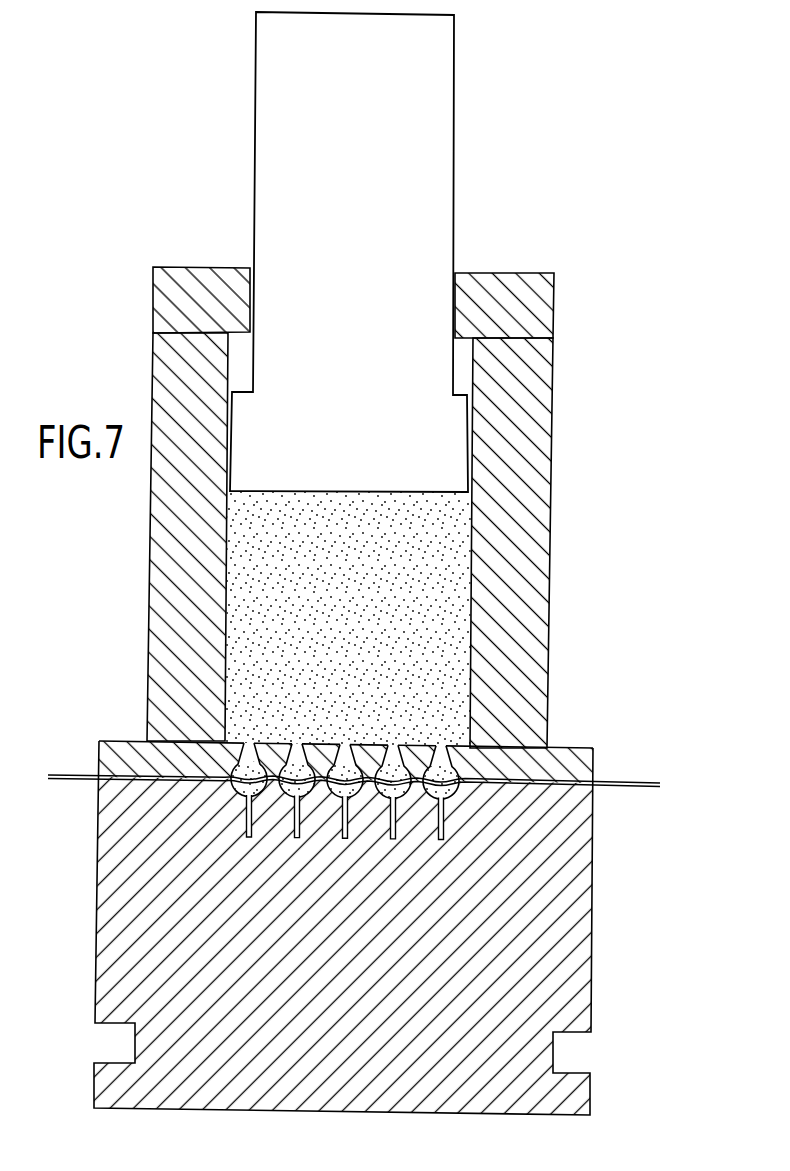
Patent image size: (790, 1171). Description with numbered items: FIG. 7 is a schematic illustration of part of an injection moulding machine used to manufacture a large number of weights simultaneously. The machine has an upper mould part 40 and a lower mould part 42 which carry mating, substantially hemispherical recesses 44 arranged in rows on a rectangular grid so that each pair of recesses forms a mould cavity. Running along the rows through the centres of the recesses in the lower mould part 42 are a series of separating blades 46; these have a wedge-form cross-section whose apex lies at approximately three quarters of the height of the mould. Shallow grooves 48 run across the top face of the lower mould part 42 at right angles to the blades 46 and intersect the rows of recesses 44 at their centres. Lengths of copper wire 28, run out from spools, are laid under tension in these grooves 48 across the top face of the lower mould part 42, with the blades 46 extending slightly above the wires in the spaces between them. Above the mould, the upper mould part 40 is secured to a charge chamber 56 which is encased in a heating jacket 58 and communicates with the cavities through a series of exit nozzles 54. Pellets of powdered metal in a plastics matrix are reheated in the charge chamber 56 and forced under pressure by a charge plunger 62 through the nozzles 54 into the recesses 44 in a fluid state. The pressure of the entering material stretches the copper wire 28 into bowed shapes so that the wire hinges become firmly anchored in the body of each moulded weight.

The copper wire 28 is at (632, 782).
The upper mould part 40 is at (378, 900).
The lower mould part 42 is at (570, 826).
The hemispherical recesses 44 is at (233, 781).
The separating blades 46 is at (246, 838).
The shallow grooves 48 is at (593, 760).
The exit nozzles 54 is at (444, 746).
The charge chamber 56 is at (469, 576).
The heating jacket 58 is at (188, 536).
The charge plunger 62 is at (361, 250).